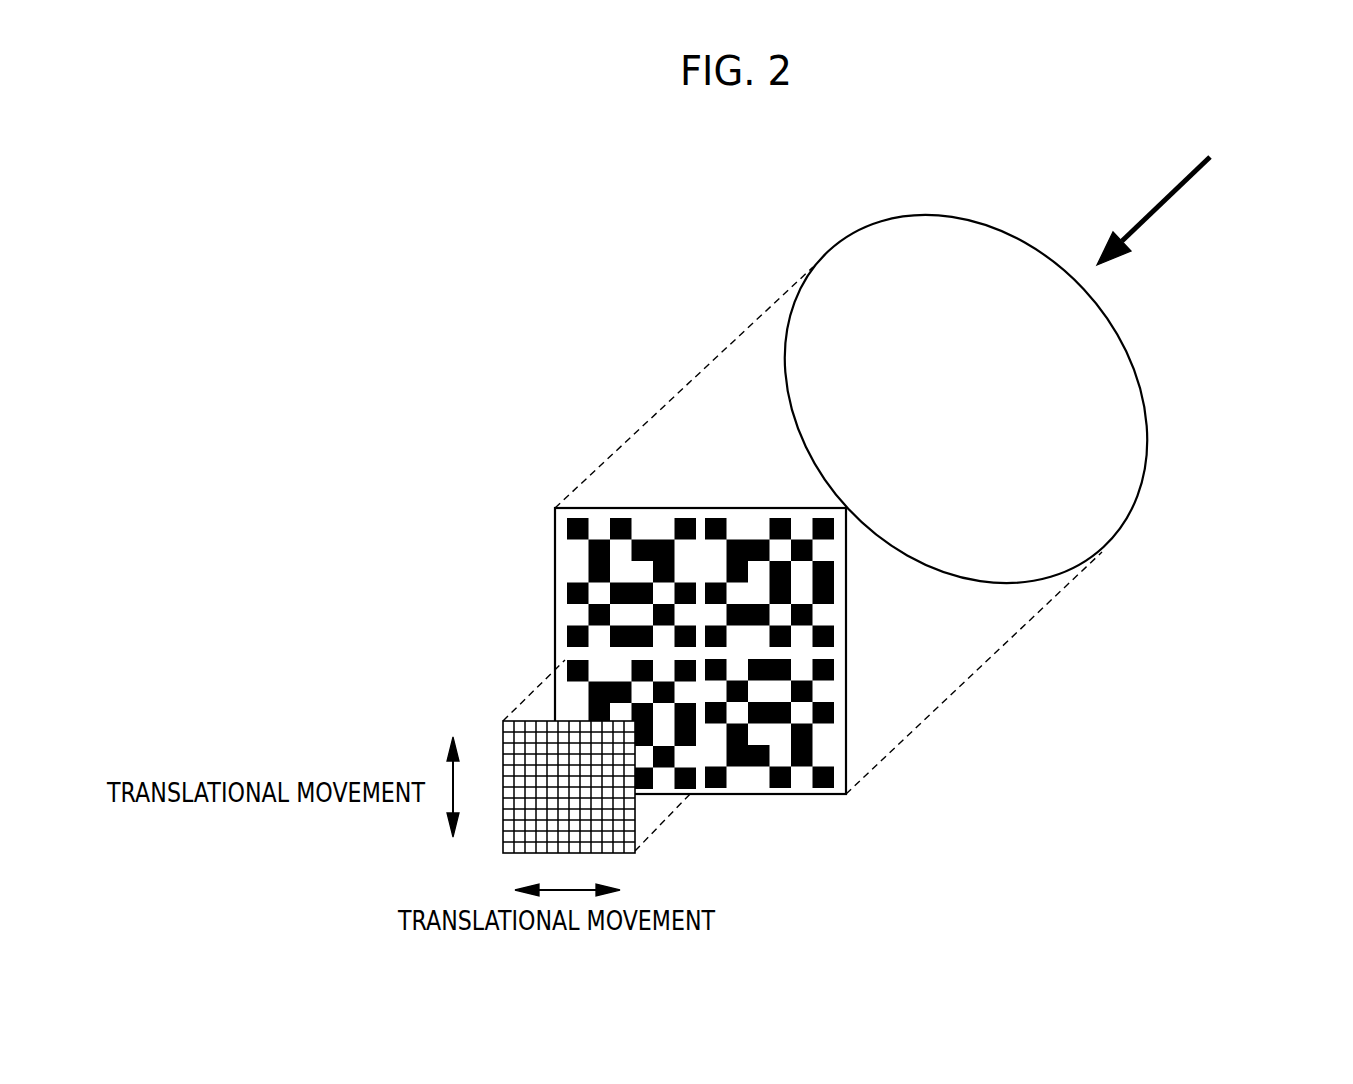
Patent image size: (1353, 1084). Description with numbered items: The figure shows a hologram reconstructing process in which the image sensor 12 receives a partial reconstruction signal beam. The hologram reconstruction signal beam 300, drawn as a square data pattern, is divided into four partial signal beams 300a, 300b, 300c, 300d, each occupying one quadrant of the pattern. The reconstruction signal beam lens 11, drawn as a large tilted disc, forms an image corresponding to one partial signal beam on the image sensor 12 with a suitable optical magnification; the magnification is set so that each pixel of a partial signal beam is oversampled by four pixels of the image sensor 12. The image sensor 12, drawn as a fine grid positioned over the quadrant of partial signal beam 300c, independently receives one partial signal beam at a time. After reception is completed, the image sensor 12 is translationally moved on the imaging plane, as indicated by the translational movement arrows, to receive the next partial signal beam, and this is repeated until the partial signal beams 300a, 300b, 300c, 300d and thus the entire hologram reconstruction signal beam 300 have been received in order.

The reconstruction signal beam lens 11 is at (852, 232).
The image sensor 12 is at (498, 737).
The hologram reconstruction signal beam 300 is at (1183, 189).
The partial signal beam 300a is at (578, 552).
The partial signal beam 300b is at (827, 617).
The partial signal beam 300c is at (667, 782).
The partial signal beam 300d is at (827, 693).